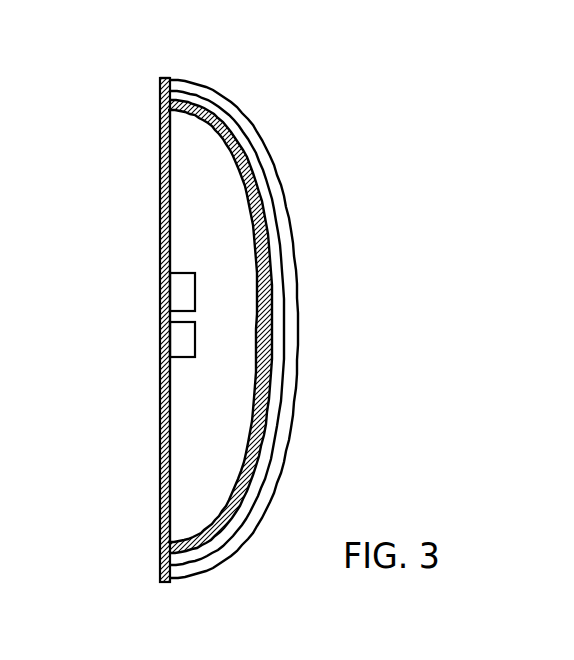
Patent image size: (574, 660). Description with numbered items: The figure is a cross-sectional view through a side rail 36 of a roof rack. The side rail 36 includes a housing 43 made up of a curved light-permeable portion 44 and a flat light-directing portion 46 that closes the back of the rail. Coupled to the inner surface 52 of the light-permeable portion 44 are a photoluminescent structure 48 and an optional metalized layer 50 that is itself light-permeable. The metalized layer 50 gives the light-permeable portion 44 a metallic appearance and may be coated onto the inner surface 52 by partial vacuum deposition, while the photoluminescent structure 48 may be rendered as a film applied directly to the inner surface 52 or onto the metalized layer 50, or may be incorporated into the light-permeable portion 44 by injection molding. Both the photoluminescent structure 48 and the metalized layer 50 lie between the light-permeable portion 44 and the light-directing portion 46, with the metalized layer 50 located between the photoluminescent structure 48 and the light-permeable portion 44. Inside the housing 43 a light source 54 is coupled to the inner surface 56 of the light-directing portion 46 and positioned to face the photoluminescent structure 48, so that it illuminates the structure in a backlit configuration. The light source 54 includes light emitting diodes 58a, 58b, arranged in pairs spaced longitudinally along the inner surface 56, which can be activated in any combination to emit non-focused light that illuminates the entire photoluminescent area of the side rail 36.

The side rail 36 is at (366, 90).
The housing 43 is at (167, 77).
The light-permeable portion 44 is at (258, 162).
The light-directing portion 46 is at (160, 173).
The photoluminescent structure 48 is at (224, 155).
The metalized layer 50 is at (276, 286).
The inner surface 52 is at (268, 211).
The light source 54 is at (152, 270).
The inner surface 56 is at (170, 415).
The light emitting diode 58a is at (190, 288).
The light emitting diode 58b is at (190, 337).